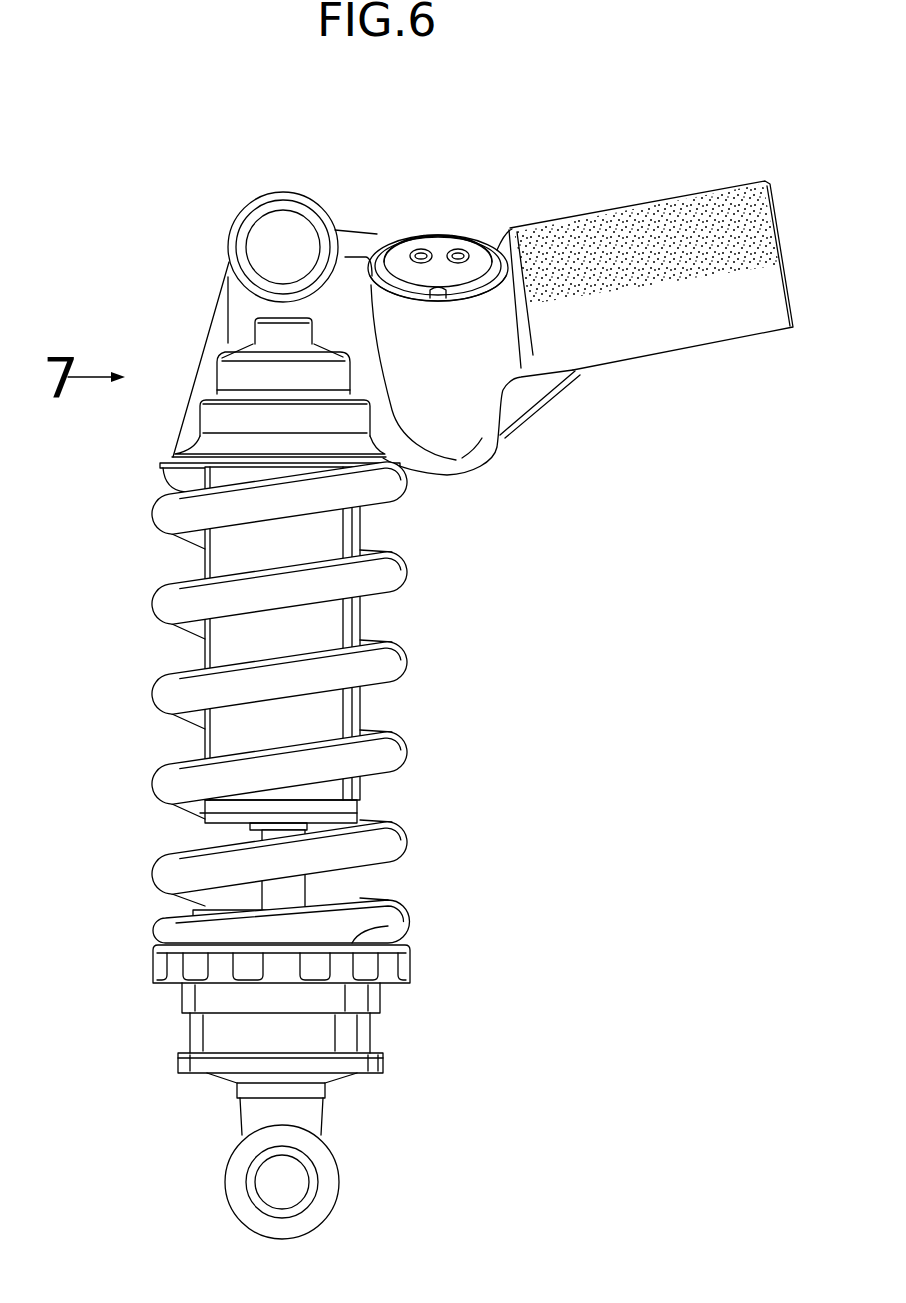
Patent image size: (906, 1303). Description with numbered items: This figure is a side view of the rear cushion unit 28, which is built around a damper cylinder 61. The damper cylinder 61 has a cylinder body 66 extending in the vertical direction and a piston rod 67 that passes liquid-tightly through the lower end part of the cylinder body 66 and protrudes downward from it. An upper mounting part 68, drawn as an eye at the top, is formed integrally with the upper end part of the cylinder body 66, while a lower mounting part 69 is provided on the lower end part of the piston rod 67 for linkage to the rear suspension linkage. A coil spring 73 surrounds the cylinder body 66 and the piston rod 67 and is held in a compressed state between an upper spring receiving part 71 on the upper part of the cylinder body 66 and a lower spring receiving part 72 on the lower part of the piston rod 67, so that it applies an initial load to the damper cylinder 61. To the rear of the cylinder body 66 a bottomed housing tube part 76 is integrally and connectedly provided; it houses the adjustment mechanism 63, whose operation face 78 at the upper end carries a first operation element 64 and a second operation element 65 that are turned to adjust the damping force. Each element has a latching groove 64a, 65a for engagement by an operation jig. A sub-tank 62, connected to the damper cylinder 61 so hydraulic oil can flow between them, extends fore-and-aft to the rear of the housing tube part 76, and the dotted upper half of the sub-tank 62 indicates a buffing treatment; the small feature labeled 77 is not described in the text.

The rear cushion unit 28 is at (583, 210).
The damper cylinder 61 is at (375, 616).
The sub-tank 62 is at (688, 335).
The adjustment mechanism 63 is at (454, 234).
The first operation element 64 is at (422, 288).
The latching groove 64a is at (420, 248).
The second operation element 65 is at (458, 265).
The latching groove 65a is at (460, 254).
The cylinder body 66 is at (210, 735).
The piston rod 67 is at (292, 897).
The upper mounting part 68 is at (247, 230).
The lower mounting part 69 is at (327, 1183).
The upper spring receiving part 71 is at (247, 478).
The lower spring receiving part 72 is at (410, 928).
The coil spring 73 is at (385, 758).
The housing tube part 76 is at (473, 422).
The notch 77 is at (441, 296).
The operation face 78 is at (440, 240).